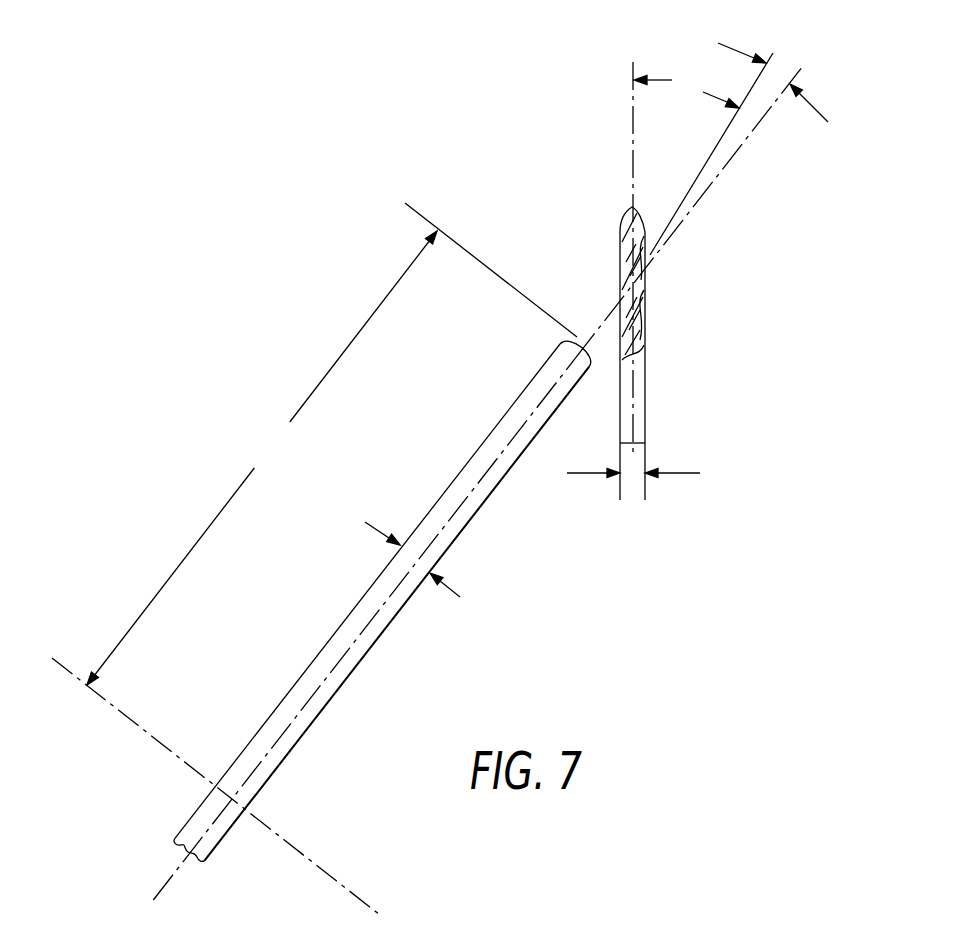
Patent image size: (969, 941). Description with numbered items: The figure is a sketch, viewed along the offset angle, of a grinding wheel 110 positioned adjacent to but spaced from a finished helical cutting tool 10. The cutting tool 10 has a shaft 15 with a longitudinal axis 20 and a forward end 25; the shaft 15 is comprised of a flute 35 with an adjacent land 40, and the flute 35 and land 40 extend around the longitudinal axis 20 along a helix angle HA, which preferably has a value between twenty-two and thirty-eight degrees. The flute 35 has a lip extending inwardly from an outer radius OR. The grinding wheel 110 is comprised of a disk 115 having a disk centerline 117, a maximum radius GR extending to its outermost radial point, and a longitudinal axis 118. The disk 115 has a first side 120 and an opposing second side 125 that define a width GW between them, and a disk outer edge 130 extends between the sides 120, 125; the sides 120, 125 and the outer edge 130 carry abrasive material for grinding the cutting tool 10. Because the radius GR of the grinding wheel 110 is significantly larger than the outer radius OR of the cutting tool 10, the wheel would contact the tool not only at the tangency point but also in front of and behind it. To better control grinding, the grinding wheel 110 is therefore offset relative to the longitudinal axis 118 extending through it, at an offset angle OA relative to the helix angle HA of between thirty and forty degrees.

The helical cutting tool 10 is at (662, 258).
The shaft 15 is at (646, 397).
The longitudinal axis 20 is at (632, 150).
The forward end 25 is at (633, 211).
The flute 35 is at (641, 307).
The land 40 is at (641, 328).
The grinding wheel 110 is at (373, 582).
The disk 115 is at (338, 678).
The disk centerline 117 is at (62, 664).
The longitudinal axis 118 is at (728, 162).
The first side 120 is at (453, 480).
The second side 125 is at (488, 497).
The disk outer edge 130 is at (582, 346).
The maximum radius GR is at (332, 444).
The width GW is at (398, 549).
The outer radius OR is at (647, 471).
The helix angle HA is at (703, 154).
The offset angle OA is at (780, 73).